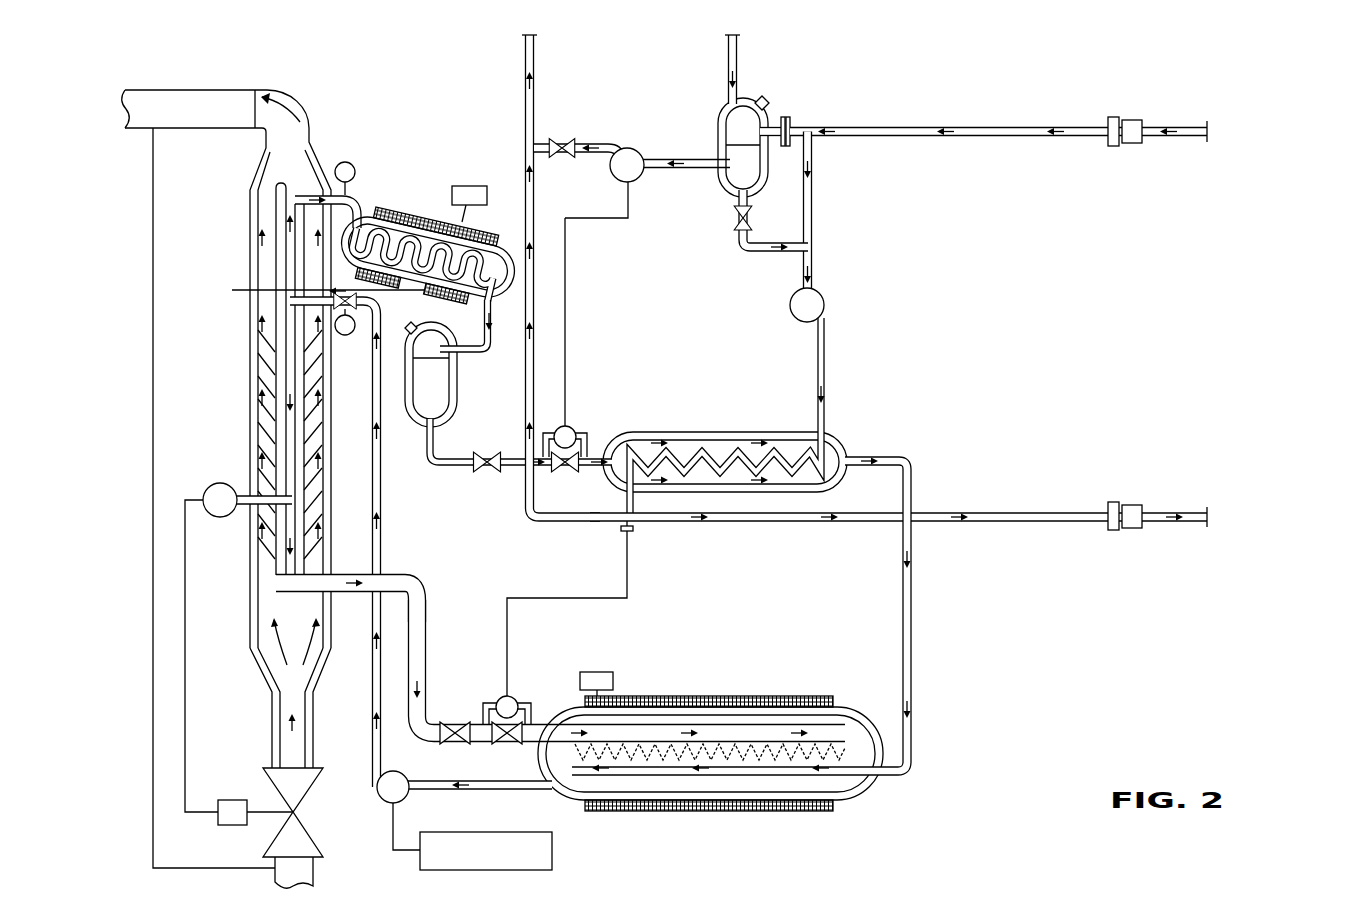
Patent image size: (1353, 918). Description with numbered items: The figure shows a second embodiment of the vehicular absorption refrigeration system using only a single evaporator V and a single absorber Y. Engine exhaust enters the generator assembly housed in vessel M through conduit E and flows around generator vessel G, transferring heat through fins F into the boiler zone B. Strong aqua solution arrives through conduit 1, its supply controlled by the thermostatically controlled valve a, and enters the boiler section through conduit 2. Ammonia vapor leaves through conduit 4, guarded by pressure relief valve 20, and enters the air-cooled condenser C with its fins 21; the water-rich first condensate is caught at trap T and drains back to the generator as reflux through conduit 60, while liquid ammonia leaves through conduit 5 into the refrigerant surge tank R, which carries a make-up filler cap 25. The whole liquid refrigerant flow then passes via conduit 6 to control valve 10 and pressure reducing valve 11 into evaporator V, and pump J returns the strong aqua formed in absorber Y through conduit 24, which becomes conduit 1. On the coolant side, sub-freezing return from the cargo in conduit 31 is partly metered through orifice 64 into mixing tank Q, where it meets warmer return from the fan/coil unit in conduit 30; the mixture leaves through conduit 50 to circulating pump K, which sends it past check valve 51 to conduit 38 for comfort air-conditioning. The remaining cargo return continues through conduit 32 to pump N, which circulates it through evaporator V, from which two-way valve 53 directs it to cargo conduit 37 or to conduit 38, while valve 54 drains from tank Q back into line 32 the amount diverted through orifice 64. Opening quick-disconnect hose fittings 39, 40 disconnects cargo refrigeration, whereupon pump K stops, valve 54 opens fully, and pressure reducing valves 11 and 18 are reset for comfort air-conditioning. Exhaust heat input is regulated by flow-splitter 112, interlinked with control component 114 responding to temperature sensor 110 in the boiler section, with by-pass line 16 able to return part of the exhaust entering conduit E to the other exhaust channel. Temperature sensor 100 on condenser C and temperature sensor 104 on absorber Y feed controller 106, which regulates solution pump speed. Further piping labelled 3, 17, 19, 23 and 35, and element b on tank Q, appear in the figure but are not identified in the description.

The conduit 1 is at (382, 496).
The conduit 2 is at (318, 485).
The line 3 is at (352, 568).
The conduit 4 is at (360, 200).
The conduit 5 is at (492, 320).
The conduit 6 is at (428, 442).
The control valve 10 is at (487, 474).
The pressure reducing valve 11 is at (578, 445).
The line 16 is at (155, 160).
The valve 17 is at (455, 722).
The pressure reducing valve 18 is at (524, 712).
The line 19 is at (911, 635).
The pressure relief valve 20 is at (345, 162).
The fins 21 is at (440, 224).
The line 23 is at (440, 790).
The conduit 24 is at (400, 758).
The make-up filler cap 25 is at (407, 328).
The conduit 30 is at (728, 62).
The conduit 31 is at (1012, 126).
The conduit 32 is at (812, 216).
The line 35 is at (826, 372).
The conduit 37 is at (1012, 512).
The conduit 38 is at (536, 63).
The quick-disconnect hose fitting 39 is at (1116, 530).
The quick-disconnect hose fitting 40 is at (1113, 146).
The conduit 50 is at (685, 168).
The check valve 51 is at (562, 139).
The two-way valve 53 is at (633, 530).
The valve 54 is at (752, 218).
The conduit 60 is at (365, 303).
The orifice 64 is at (790, 117).
The temperature sensor 100 is at (468, 186).
The temperature sensor 104 is at (592, 672).
The controller 106 is at (552, 851).
The temperature sensor 110 is at (212, 486).
The flow-splitter 112 is at (300, 798).
The control system component 114 is at (232, 800).
The boiler zone B is at (295, 490).
The condenser C is at (420, 212).
The conduit E is at (283, 715).
The fins F is at (268, 377).
The generator vessel G is at (275, 437).
The pump J is at (377, 782).
The air-conditioning circulating pump K is at (634, 150).
The vessel M is at (250, 590).
The circulating pump N is at (824, 298).
The mixing tank Q is at (718, 135).
The refrigerant surge tank R is at (440, 390).
The trap T is at (420, 296).
The evaporator V is at (724, 432).
The absorber Y is at (676, 705).
The valve a is at (346, 336).
The sensor b is at (768, 100).